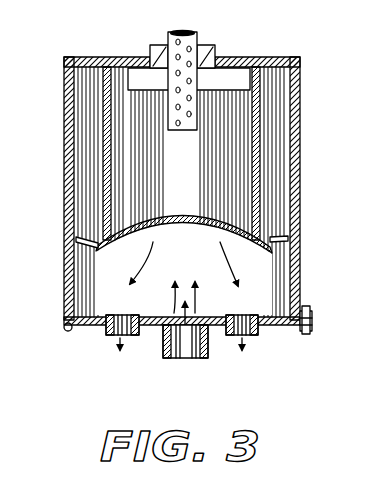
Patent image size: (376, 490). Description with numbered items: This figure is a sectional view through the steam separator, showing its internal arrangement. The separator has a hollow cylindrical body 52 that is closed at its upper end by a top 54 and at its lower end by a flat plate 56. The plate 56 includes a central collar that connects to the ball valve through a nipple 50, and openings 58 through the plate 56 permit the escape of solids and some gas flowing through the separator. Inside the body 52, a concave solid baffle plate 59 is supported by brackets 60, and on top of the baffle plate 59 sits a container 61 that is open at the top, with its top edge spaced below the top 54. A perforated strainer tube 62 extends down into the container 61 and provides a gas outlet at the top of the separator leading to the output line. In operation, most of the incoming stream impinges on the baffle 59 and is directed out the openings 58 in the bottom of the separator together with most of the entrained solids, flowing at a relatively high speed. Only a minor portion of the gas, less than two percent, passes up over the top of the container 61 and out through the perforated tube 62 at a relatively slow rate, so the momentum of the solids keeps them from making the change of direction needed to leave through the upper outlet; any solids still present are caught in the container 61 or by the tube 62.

The nipple 50 is at (208, 350).
The hollow cylindrical body 52 is at (293, 191).
The top 54 is at (131, 57).
The flat plate 56 is at (288, 334).
The openings 58 is at (128, 337).
The concave solid baffle plate 59 is at (216, 195).
The brackets 60 is at (90, 240).
The container 61 is at (262, 126).
The perforated strainer tube 62 is at (193, 110).